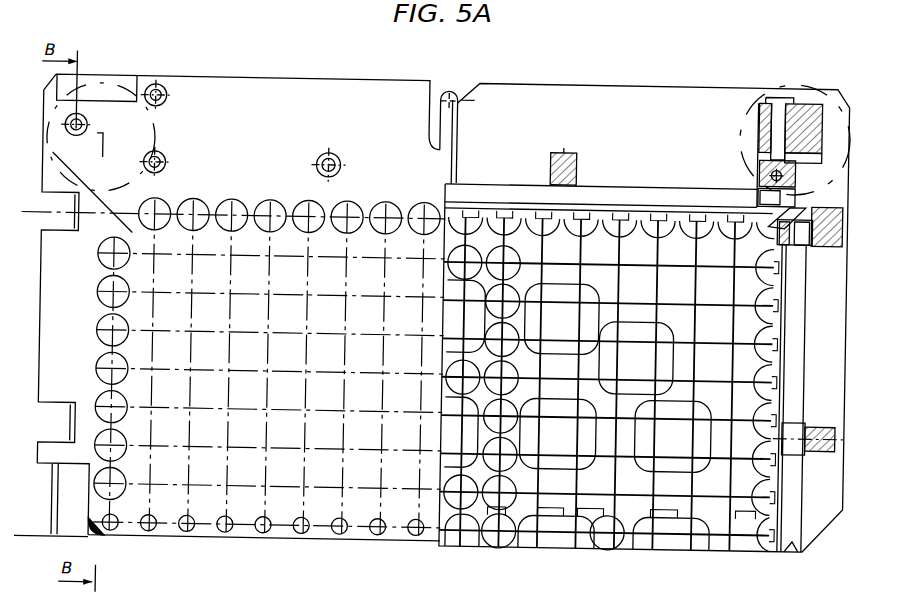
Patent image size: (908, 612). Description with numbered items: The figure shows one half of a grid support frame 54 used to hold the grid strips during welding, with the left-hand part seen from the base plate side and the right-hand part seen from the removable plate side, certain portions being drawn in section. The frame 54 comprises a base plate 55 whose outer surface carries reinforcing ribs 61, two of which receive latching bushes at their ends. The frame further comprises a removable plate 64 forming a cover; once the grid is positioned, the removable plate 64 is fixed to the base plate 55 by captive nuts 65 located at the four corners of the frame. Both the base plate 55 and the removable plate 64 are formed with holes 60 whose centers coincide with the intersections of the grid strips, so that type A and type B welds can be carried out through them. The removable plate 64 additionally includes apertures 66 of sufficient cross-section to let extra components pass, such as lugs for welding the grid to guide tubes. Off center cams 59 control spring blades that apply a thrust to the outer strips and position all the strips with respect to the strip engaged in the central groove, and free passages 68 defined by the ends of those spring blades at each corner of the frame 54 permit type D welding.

The support frame 54 is at (656, 76).
The base plate 55 is at (259, 116).
The off center cams 59 is at (801, 368).
The holes 60 is at (308, 204).
The reinforcing ribs 61 is at (433, 225).
The removable plate 64 is at (590, 101).
The captive nuts 65 is at (827, 116).
The apertures 66 is at (559, 279).
The free passages 68 is at (806, 201).